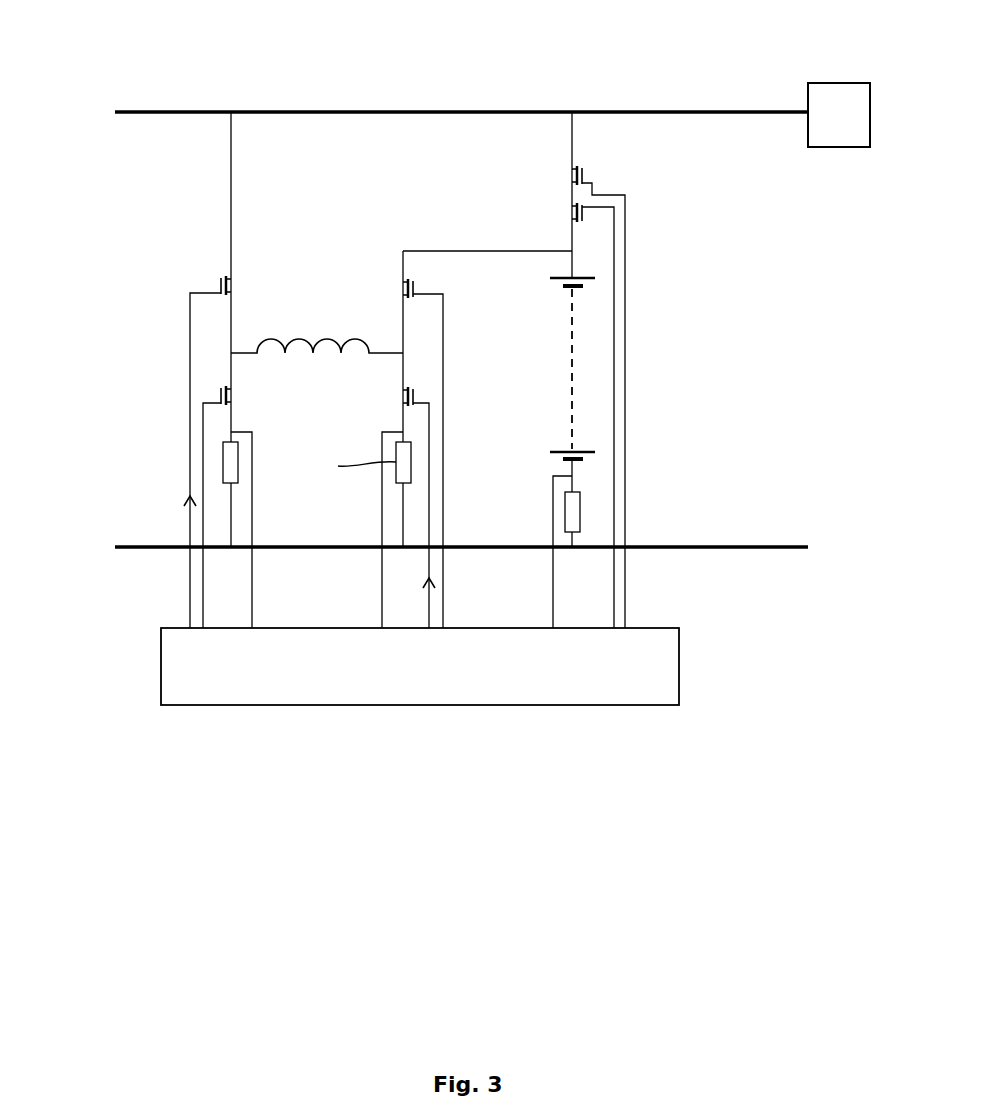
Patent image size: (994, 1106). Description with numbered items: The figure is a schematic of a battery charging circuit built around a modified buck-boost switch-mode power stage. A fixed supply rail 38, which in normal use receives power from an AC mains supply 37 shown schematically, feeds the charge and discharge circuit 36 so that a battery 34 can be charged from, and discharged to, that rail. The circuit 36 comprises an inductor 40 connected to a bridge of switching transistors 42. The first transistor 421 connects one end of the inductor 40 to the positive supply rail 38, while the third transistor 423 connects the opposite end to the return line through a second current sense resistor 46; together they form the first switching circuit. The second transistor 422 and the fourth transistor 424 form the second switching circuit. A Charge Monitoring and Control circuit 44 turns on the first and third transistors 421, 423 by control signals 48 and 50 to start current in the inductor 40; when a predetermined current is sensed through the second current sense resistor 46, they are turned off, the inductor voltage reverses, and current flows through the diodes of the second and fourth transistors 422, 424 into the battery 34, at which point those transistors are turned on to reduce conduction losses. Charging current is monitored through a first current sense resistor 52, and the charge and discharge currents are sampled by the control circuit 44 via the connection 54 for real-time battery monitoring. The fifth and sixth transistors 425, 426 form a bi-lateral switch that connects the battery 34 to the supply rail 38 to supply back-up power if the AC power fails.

The battery 34 is at (552, 367).
The charge and discharge circuit 36 is at (70, 251).
The AC mains supply 37 is at (825, 83).
The supply rail 38 is at (738, 110).
The inductor 40 is at (304, 322).
The transistors 42 is at (412, 370).
The transistor Q1 421 is at (220, 283).
The transistor Q2 422 is at (416, 286).
The transistor Q3 423 is at (416, 396).
The transistor Q4 424 is at (220, 395).
The transistor Q5 425 is at (590, 177).
The transistor Q6 426 is at (590, 216).
The Charge Monitoring and Control circuit 44 is at (650, 668).
The current sense resistor R2 46 is at (396, 478).
The control signal 48 is at (190, 518).
The control signal 50 is at (431, 598).
The current sense resistor R1 52 is at (223, 450).
The connection 54 is at (553, 598).